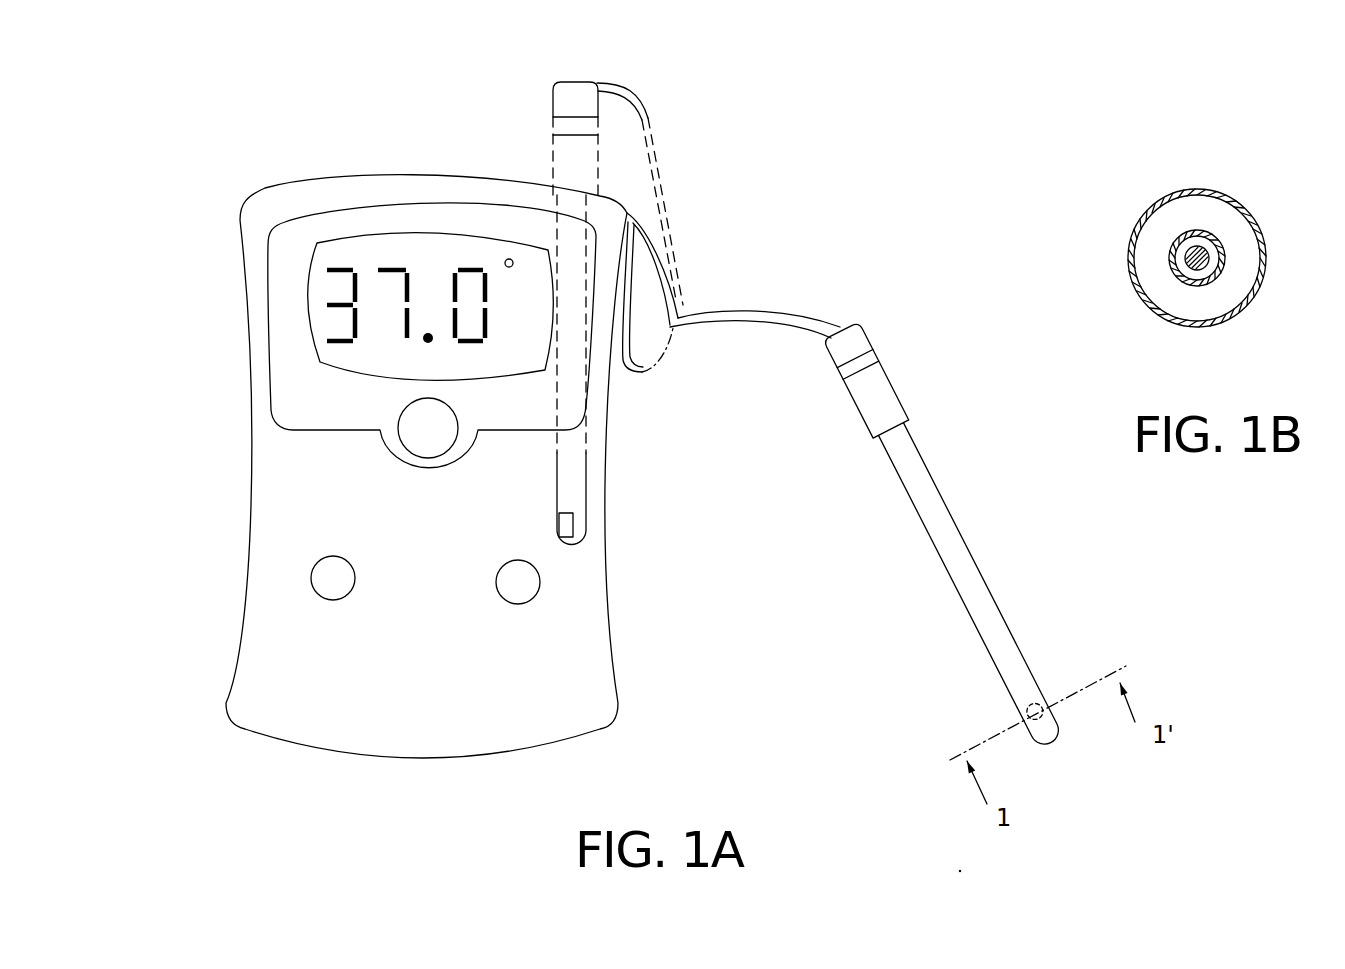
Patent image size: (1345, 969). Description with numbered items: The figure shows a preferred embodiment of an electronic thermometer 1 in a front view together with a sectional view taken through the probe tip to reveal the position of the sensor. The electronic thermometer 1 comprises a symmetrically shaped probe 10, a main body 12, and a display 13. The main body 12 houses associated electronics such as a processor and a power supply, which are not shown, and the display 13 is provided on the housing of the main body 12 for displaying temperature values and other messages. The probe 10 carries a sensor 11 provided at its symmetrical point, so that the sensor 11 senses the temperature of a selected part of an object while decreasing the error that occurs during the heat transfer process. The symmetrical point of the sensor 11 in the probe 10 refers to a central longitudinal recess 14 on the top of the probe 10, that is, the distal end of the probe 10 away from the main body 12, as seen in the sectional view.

In FIG. 1A, the electronic thermometer 1 is at (250, 157).
In FIG. 1A, the probe 10 is at (933, 509).
In FIG. 1B, the probe 10 is at (1265, 243).
In FIG. 1A, the sensor 11 is at (1036, 704).
In FIG. 1B, the sensor 11 is at (1203, 262).
In FIG. 1A, the main body 12 is at (432, 173).
In FIG. 1A, the display 13 is at (327, 357).
In FIG. 1B, the central longitudinal recess 14 is at (1180, 233).